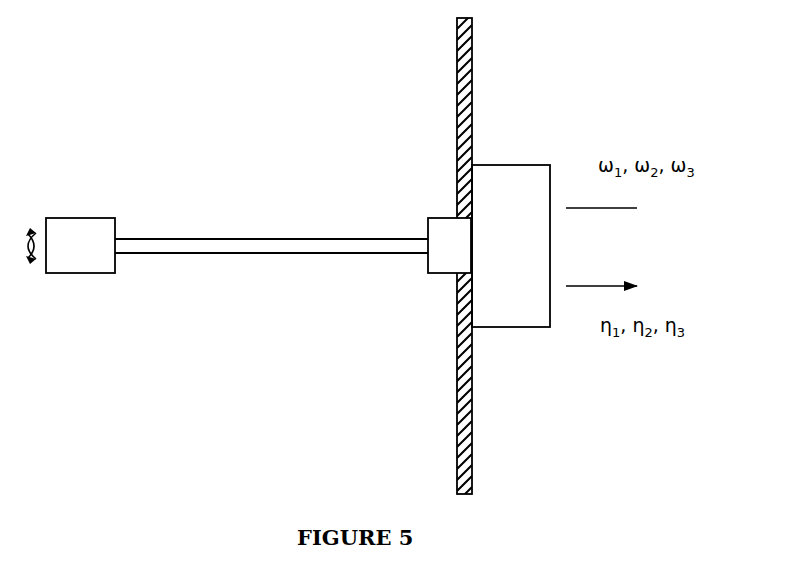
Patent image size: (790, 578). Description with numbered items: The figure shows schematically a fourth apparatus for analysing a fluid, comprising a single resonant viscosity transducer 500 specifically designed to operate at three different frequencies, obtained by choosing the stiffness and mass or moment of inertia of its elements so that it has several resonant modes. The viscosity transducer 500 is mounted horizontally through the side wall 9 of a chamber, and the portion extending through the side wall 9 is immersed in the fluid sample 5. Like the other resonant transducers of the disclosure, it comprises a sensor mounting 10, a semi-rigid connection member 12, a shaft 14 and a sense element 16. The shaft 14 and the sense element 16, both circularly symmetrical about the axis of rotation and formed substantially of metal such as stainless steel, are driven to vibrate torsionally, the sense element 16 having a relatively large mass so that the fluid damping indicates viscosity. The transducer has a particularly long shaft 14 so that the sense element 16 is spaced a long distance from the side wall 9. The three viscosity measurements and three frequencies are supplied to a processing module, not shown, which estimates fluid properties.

The fluid sample 5 is at (226, 393).
The side wall 9 is at (457, 465).
The sensor mounting 10 is at (527, 165).
The semi-rigid connection member 12 is at (445, 217).
The shaft 14 is at (252, 238).
The sense element 16 is at (100, 218).
The resonant viscosity transducer 500 is at (522, 343).